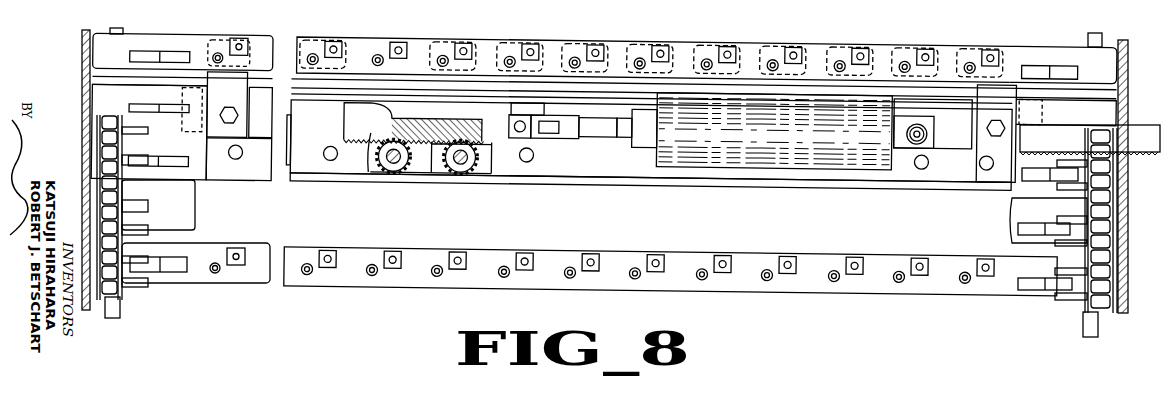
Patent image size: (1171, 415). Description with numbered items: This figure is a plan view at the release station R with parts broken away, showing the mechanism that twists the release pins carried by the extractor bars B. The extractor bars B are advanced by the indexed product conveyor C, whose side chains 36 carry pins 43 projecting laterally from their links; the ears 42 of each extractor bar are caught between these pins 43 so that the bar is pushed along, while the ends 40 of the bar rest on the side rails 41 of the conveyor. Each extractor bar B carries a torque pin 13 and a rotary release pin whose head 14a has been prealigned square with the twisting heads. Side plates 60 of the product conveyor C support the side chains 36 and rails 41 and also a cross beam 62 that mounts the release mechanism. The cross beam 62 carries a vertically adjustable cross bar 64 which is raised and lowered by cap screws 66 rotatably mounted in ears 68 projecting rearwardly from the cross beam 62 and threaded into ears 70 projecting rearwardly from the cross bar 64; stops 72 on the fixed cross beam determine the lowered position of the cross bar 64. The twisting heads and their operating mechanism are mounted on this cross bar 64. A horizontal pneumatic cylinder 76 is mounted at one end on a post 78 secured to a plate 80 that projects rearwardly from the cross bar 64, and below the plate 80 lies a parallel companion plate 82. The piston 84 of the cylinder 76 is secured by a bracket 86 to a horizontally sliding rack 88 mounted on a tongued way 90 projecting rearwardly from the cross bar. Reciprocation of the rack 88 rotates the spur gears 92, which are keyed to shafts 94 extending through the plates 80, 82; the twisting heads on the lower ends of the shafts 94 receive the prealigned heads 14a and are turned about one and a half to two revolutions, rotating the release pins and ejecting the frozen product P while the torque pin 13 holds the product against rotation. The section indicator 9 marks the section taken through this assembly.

The section line 9 is at (116, 27).
The torque pin 13 is at (378, 53).
The release pin head 14a is at (928, 50).
The side chains 36 is at (1085, 312).
The extractor bar ends 40 is at (90, 45).
The side rails 41 is at (116, 28).
The extractor bar ears 42 is at (165, 53).
The chain pins 43 is at (132, 283).
The side plates 60 is at (85, 63).
The cross beam 62 is at (618, 80).
The cross bar 64 is at (563, 97).
The cap screws 66 is at (232, 126).
The cross beam ears 68 is at (253, 73).
The cross bar ears 70 is at (133, 97).
The stops 72 is at (200, 137).
The pneumatic cylinder 76 is at (787, 139).
The post 78 is at (922, 132).
The plate 80 is at (323, 165).
The companion plate 82 is at (435, 175).
The piston 84 is at (612, 147).
The bracket 86 is at (534, 140).
The rack 88 is at (422, 170).
The tongued way 90 is at (352, 103).
The spur gears 92 is at (410, 172).
The shafts 94 is at (391, 172).
The extractor bar B is at (690, 43).
The frozen product P is at (443, 44).
The release station R is at (776, 45).
The product conveyor C is at (1103, 200).